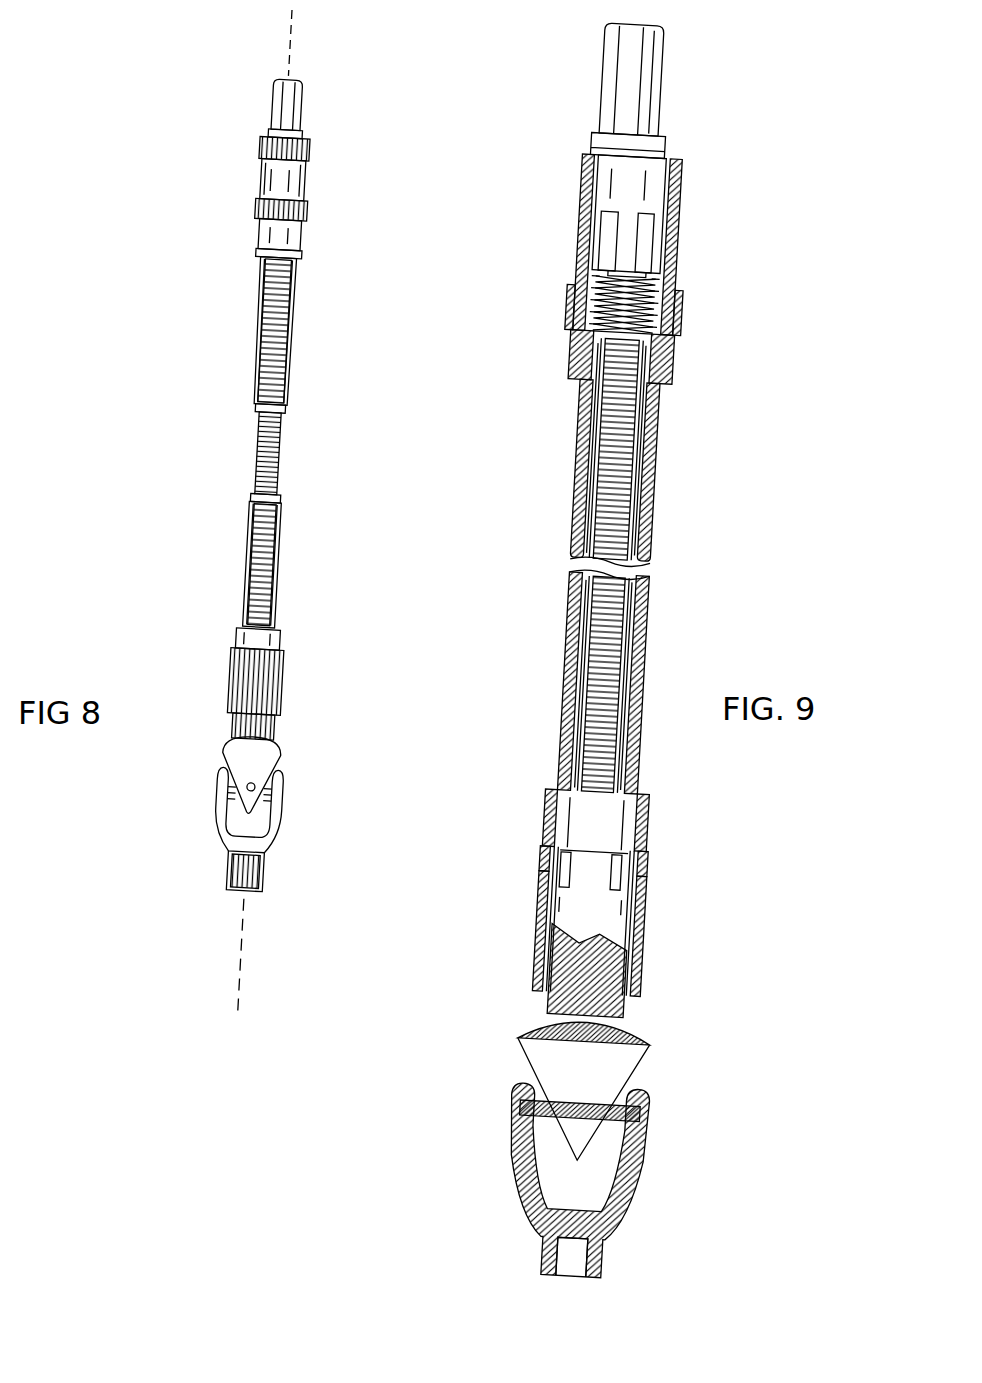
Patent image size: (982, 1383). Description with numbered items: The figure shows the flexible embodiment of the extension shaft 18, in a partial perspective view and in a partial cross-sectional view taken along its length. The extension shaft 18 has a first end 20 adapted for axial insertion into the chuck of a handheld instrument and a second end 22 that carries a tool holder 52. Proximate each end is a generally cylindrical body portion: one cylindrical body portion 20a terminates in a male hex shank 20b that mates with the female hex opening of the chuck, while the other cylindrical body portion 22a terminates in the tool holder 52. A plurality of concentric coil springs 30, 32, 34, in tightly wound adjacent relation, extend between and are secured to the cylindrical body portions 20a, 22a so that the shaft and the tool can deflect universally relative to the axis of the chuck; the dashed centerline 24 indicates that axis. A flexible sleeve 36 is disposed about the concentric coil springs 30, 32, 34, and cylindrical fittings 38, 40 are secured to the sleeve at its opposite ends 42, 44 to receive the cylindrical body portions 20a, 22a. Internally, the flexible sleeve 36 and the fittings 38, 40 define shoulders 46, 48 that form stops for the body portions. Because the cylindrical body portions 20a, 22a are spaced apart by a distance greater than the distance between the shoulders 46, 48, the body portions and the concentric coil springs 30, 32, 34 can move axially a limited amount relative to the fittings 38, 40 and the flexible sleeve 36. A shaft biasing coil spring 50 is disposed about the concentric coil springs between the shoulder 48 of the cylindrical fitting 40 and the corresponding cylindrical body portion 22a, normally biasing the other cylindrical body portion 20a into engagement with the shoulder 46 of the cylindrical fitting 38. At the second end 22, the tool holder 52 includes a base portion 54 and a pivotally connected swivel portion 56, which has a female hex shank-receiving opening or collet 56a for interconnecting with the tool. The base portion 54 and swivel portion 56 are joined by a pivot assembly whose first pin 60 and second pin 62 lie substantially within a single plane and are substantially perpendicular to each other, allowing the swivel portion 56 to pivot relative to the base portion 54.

In FIG. 8, the extension shaft 18 is at (302, 350).
In FIG. 9, the extension shaft 18 is at (657, 458).
In FIG. 8, the first end 20 is at (306, 137).
In FIG. 9, the first end 20 is at (576, 172).
In FIG. 9, the cylindrical body portion 20a is at (650, 190).
In FIG. 8, the male hex shank 20b is at (291, 100).
In FIG. 9, the male hex shank 20b is at (664, 104).
In FIG. 8, the second end 22 is at (296, 742).
In FIG. 9, the second end 22 is at (626, 1010).
In FIG. 9, the cylindrical body portion 22a is at (640, 970).
In FIG. 8, the longitudinal axis 24 is at (295, 18).
In FIG. 8, the concentric coil spring 30 is at (285, 462).
In FIG. 9, the concentric coil spring 30 is at (631, 530).
In FIG. 9, the concentric coil spring 32 is at (626, 568).
In FIG. 9, the concentric coil spring 34 is at (596, 568).
In FIG. 8, the flexible sleeve 36 is at (286, 566).
In FIG. 9, the flexible sleeve 36 is at (645, 660).
In FIG. 8, the cylindrical fitting 38 is at (309, 182).
In FIG. 9, the cylindrical fitting 38 is at (672, 248).
In FIG. 8, the cylindrical fitting 40 is at (276, 690).
In FIG. 9, the cylindrical fitting 40 is at (646, 912).
In FIG. 9, the end 42 is at (666, 356).
In FIG. 9, the end 44 is at (646, 818).
In FIG. 9, the shoulder 46 is at (568, 312).
In FIG. 9, the shoulder 48 is at (652, 862).
In FIG. 9, the shaft biasing coil spring 50 is at (666, 298).
In FIG. 8, the tool holder 52 is at (348, 782).
In FIG. 9, the tool holder 52 is at (729, 1121).
In FIG. 8, the base portion 54 is at (225, 752).
In FIG. 9, the base portion 54 is at (650, 1050).
In FIG. 8, the swivel portion 56 is at (225, 855).
In FIG. 9, the swivel portion 56 is at (640, 1216).
In FIG. 9, the collet 56a is at (590, 1280).
In FIG. 8, the first pin 60 is at (238, 805).
In FIG. 8, the second pin 62 is at (290, 812).
In FIG. 9, the second pin 62 is at (510, 1166).